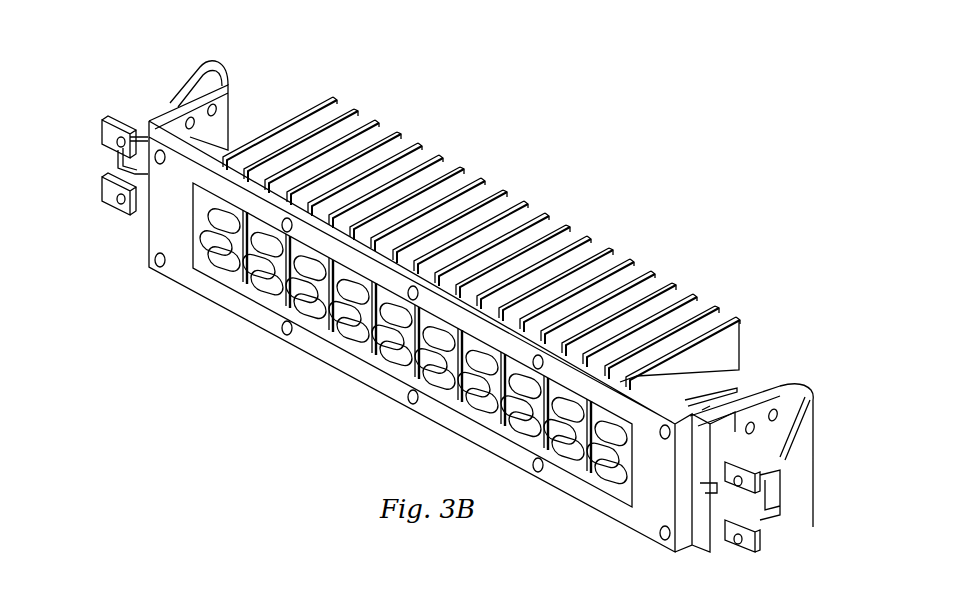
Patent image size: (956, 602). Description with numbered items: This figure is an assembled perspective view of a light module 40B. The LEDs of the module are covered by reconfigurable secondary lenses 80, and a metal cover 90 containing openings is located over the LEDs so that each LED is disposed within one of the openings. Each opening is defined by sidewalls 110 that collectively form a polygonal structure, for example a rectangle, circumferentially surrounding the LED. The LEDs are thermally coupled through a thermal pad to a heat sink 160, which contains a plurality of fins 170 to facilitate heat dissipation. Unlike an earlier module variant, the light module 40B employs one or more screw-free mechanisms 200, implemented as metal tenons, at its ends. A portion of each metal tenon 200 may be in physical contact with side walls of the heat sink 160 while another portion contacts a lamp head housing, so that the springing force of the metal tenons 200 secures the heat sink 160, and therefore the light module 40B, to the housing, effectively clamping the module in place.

The light module 40B is at (262, 376).
The reconfigurable secondary lenses 80 is at (262, 282).
The metal cover 90 is at (345, 363).
The sidewalls 110 is at (479, 415).
The heat sink 160 is at (205, 147).
The fins 170 is at (598, 237).
The screw-free mechanism 200 is at (207, 68).